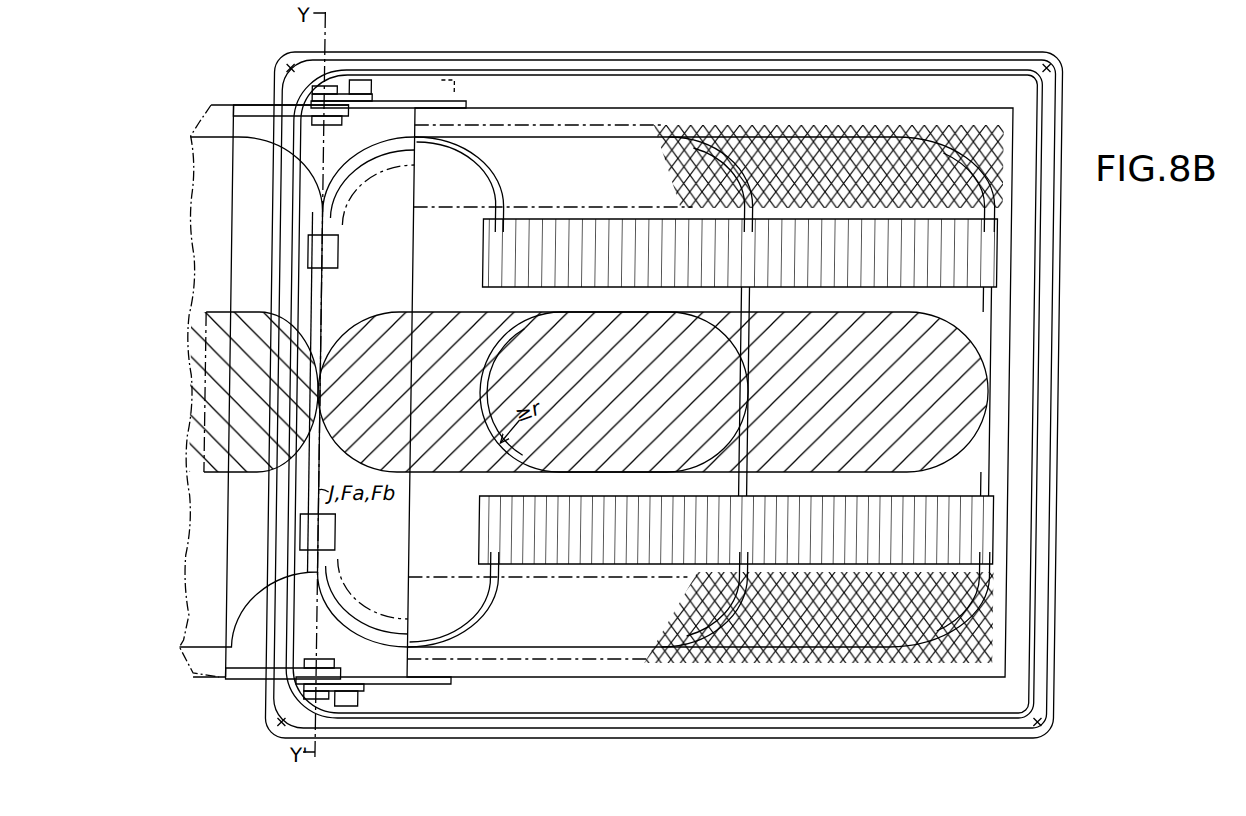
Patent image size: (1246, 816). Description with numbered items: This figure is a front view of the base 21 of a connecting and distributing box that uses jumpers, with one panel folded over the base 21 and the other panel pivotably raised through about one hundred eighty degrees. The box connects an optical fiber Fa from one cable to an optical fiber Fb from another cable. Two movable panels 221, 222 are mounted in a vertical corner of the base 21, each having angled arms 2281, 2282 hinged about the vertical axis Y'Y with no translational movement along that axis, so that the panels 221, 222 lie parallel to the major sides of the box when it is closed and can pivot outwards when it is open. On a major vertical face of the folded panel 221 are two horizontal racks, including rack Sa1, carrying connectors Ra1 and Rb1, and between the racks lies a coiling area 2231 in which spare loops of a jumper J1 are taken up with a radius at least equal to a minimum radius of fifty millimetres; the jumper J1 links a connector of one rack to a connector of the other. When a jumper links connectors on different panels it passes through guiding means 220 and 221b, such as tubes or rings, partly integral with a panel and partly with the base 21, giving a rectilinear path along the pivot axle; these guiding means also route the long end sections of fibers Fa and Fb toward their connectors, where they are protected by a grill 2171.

The base 21 is at (965, 53).
The movable panel 221 is at (675, 104).
The grill 2171 is at (832, 126).
The coiling area 2231 is at (834, 412).
The movable panel 222 is at (198, 302).
The arm 2282 is at (252, 100).
The arm 2281 is at (414, 96).
The guiding means 220 is at (334, 574).
The guiding means 221b is at (333, 244).
The jumper J1 is at (718, 340).
The connector Rb1 is at (603, 214).
The connector Ra1 is at (622, 562).
The optical fiber Fa is at (607, 637).
The optical fiber Fb is at (541, 150).
The rack Sa1 is at (541, 203).